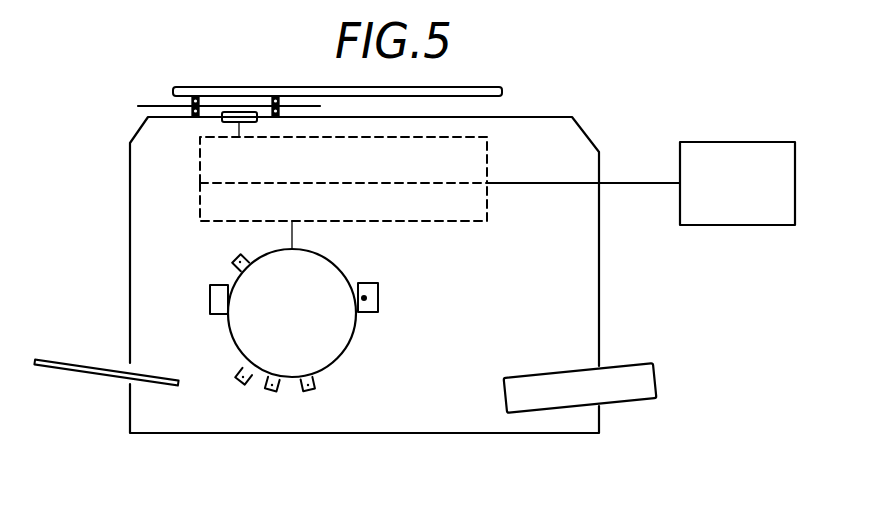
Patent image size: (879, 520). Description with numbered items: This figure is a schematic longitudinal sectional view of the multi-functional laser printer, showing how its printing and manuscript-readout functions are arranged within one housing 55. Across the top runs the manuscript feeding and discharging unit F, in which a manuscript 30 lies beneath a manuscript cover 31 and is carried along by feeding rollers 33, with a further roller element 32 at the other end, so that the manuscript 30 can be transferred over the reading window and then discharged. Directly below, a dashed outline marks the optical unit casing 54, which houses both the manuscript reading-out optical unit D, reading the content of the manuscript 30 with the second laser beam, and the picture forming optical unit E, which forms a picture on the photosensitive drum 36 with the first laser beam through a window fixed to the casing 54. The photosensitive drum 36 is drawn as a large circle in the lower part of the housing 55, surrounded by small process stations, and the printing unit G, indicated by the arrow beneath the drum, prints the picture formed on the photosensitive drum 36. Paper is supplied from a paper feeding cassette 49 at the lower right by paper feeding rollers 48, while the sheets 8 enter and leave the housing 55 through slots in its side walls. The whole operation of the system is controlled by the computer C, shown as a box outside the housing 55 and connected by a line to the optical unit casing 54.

The film 8 is at (269, 366).
The manuscript 30 is at (150, 105).
The manuscript cover 31 is at (503, 88).
The holder block 32 is at (192, 98).
The feeding rollers 33 is at (273, 97).
The photosensitive drum 36 is at (230, 327).
The paper feeding rollers 48 is at (615, 367).
The paper feeding cassette 49 is at (657, 382).
The optical unit casing 54 is at (300, 189).
The housing 55 is at (600, 278).
The computer C is at (775, 225).
The manuscript reading-out optical unit D is at (488, 156).
The picture forming optical unit E is at (488, 219).
The manuscript feeding and discharging unit F is at (364, 61).
The printing unit G is at (289, 388).